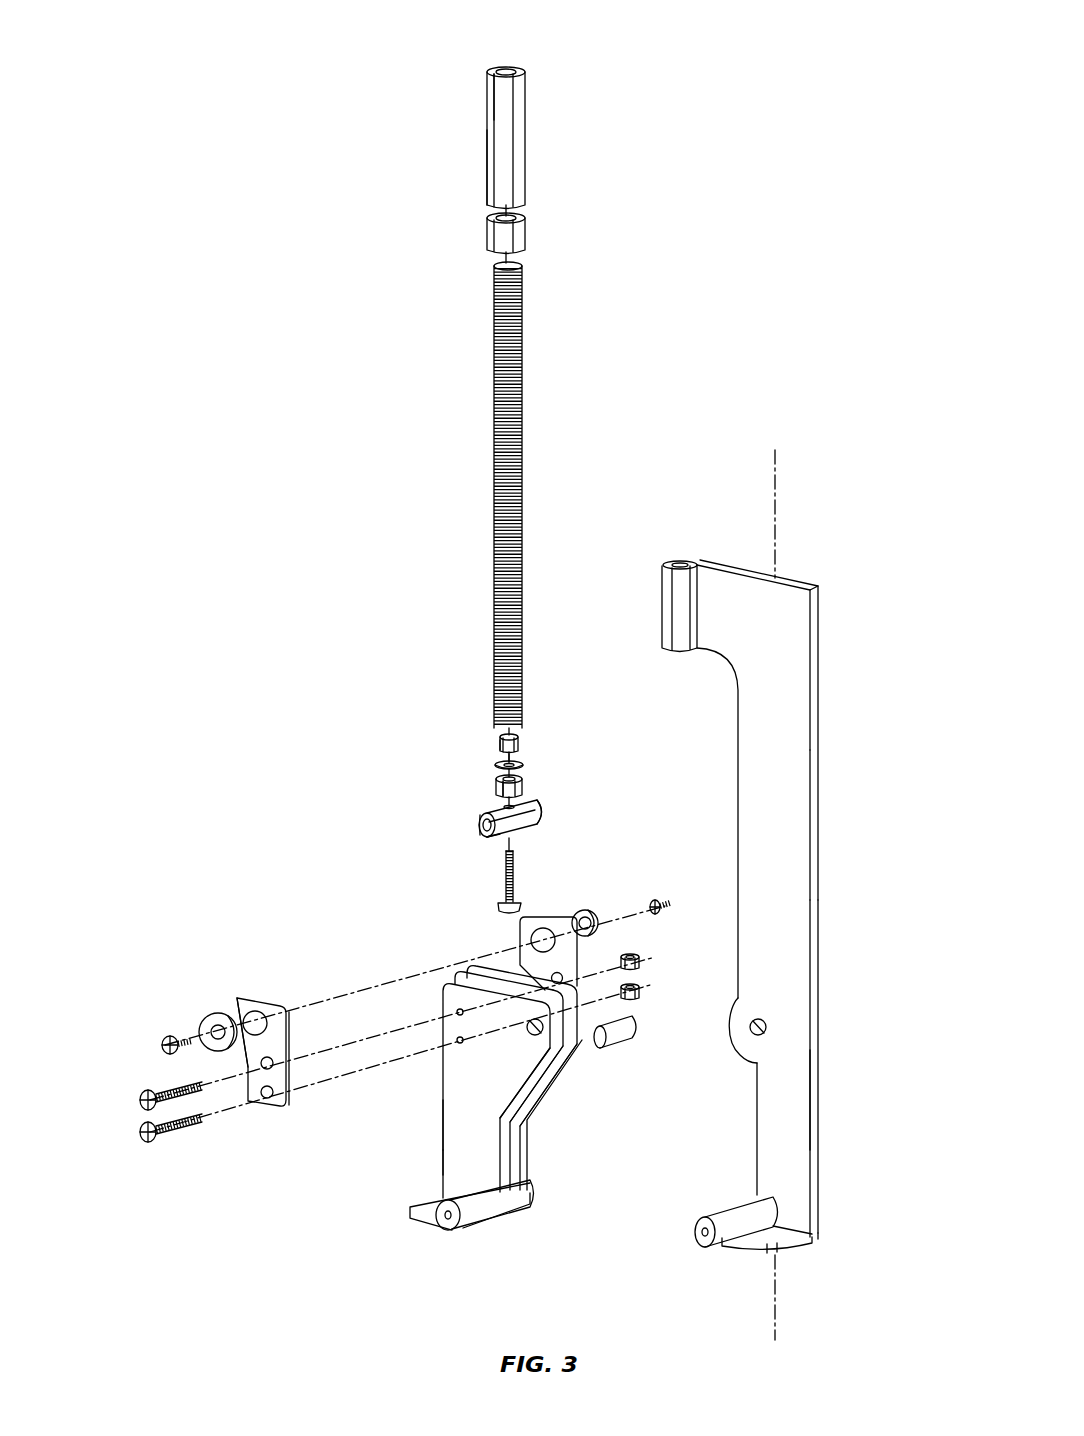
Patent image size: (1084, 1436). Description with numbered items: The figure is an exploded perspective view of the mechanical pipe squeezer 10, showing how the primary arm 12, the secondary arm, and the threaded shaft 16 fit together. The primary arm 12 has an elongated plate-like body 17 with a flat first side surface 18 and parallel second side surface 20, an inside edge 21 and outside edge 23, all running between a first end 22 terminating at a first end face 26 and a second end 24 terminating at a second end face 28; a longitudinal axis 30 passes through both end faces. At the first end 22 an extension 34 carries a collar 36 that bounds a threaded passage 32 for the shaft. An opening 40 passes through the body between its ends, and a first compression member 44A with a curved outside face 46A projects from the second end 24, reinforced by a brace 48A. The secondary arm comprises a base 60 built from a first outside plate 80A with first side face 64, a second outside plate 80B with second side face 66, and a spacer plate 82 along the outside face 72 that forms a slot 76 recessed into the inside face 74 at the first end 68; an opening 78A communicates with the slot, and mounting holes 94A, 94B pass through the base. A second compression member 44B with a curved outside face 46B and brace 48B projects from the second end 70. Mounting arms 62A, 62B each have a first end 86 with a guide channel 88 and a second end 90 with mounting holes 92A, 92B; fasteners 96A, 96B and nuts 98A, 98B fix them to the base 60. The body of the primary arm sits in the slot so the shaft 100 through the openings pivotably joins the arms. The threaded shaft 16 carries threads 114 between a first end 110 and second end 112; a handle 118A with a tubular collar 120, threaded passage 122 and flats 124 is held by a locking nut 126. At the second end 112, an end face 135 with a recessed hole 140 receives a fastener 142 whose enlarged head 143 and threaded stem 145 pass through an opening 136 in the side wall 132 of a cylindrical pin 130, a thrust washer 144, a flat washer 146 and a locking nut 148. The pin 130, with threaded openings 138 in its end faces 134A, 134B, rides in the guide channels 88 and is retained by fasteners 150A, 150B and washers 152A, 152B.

The mechanical pipe squeezer 10 is at (862, 152).
The primary arm 12 is at (805, 960).
The threaded shaft 16 is at (494, 540).
The elongated body 17 is at (810, 800).
The first side surface 18 is at (795, 697).
The second side surface 20 is at (820, 745).
The inside edge 21 is at (756, 1078).
The first end 22 is at (848, 612).
The outside edge 23 is at (820, 1090).
The second end 24 is at (772, 1229).
The first end face 26 is at (792, 585).
The second end face 28 is at (808, 1250).
The longitudinal axis 30 is at (777, 528).
The threaded passage 32 is at (679, 562).
The extension 34 is at (708, 650).
The collar 36 is at (677, 588).
The opening 40 is at (768, 1027).
The first compression member 44A is at (708, 1243).
The second compression member 44B is at (450, 1222).
The outside face 46A is at (700, 1235).
The outside face 46B is at (505, 1207).
The brace 48A is at (790, 1233).
The brace 48B is at (416, 1222).
The base 60 is at (436, 1052).
The mounting arm 62A is at (255, 1010).
The mounting arm 62B is at (555, 935).
The first side face 64 is at (442, 1160).
The second side face 66 is at (526, 1125).
The first end 68 is at (440, 968).
The second end 70 is at (527, 1234).
The outside face 72 is at (442, 1077).
The inside face 74 is at (516, 1158).
The slot 76 is at (542, 1080).
The opening 78A is at (535, 1036).
The first outside plate 80A is at (442, 1172).
The second outside plate 80B is at (530, 1140).
The spacer plate 82 is at (485, 983).
The first end 86 is at (218, 967).
The guide channel 88 is at (560, 922).
The second end 90 is at (255, 1130).
The mounting hole 92A is at (550, 978).
The mounting hole 92B is at (274, 1095).
The mounting hole 94A is at (463, 1012).
The mounting hole 94B is at (463, 1040).
The fastener 96A is at (140, 1102).
The fastener 96B is at (142, 1140).
The nut 98A is at (636, 958).
The nut 98B is at (640, 990).
The shaft 100 is at (628, 1027).
The first end 110 is at (487, 495).
The second end 112 is at (382, 690).
The threads 114 is at (523, 366).
The handle 118A is at (576, 150).
The tubular collar 120 is at (487, 155).
The threaded passage 122 is at (505, 68).
The flats 124 is at (497, 125).
The locking nut 126 is at (525, 240).
The cylindrical pin 130 is at (500, 810).
The side wall 132 is at (522, 790).
The end face 134A is at (484, 824).
The end face 134B is at (538, 812).
The end face 135 is at (512, 735).
The opening 136 is at (508, 797).
The threaded opening 138 is at (490, 838).
The recessed hole 140 is at (502, 742).
The fastener 142 is at (514, 882).
The enlarged head 143 is at (503, 907).
The thrust washer 144 is at (498, 765).
The threaded stem 145 is at (513, 868).
The flat washer 146 is at (524, 765).
The locking nut 148 is at (520, 745).
The fastener 150A is at (162, 1047).
The fastener 150B is at (665, 905).
The washer 152A is at (200, 1022).
The washer 152B is at (592, 915).